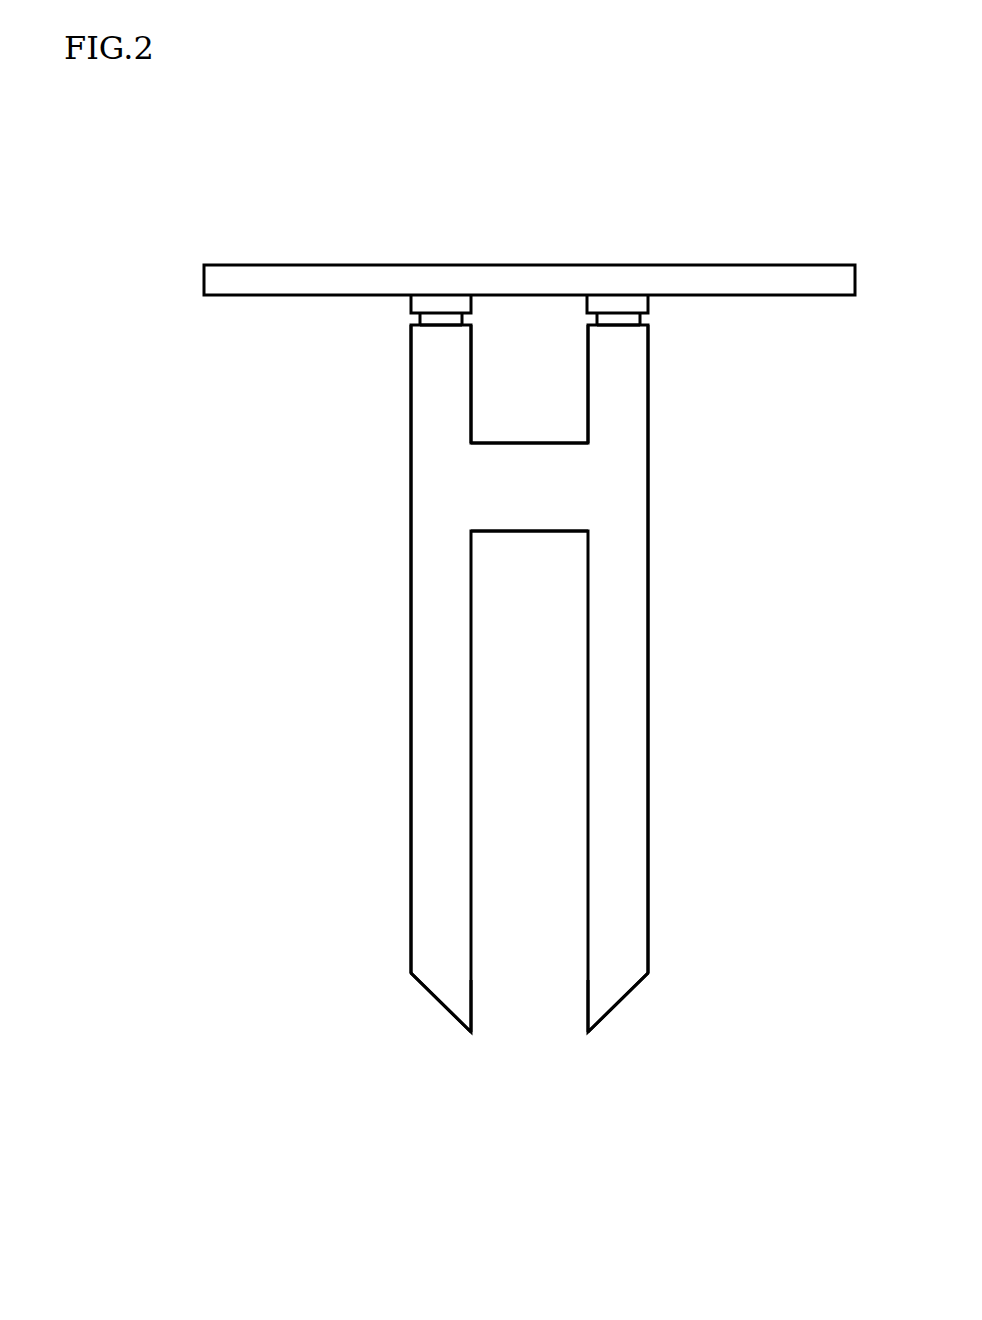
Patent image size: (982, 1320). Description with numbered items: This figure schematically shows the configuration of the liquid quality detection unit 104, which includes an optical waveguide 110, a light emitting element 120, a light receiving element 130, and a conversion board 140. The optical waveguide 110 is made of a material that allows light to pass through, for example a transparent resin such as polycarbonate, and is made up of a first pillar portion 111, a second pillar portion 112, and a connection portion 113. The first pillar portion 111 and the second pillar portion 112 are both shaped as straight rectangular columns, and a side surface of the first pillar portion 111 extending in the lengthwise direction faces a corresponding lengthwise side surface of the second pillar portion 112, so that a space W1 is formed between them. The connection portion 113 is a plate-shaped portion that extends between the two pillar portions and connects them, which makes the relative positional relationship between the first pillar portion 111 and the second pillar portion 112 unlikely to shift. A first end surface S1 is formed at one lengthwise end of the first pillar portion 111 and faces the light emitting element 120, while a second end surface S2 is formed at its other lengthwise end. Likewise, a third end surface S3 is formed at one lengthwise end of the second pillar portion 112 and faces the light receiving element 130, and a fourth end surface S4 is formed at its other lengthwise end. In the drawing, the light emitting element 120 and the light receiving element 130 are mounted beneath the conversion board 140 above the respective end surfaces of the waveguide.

The liquid quality detection unit 104 is at (412, 1142).
The optical waveguide 110 is at (662, 799).
The first pillar portion 111 is at (648, 513).
The second pillar portion 112 is at (411, 661).
The connection portion 113 is at (500, 531).
The light emitting element 120 is at (616, 302).
The light receiving element 130 is at (437, 304).
The conversion board 140 is at (786, 264).
The first end surface S1 is at (615, 328).
The second end surface S2 is at (622, 1000).
The third end surface S3 is at (472, 330).
The fourth end surface S4 is at (433, 998).
The space W1 is at (551, 1022).